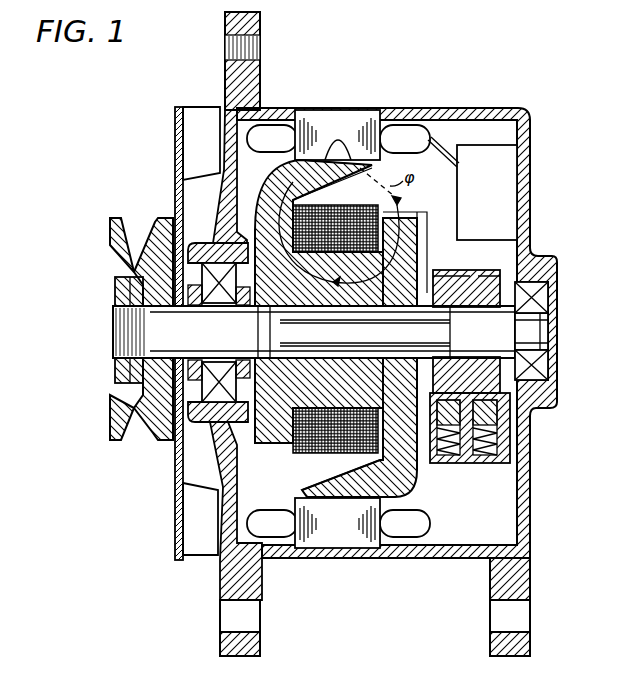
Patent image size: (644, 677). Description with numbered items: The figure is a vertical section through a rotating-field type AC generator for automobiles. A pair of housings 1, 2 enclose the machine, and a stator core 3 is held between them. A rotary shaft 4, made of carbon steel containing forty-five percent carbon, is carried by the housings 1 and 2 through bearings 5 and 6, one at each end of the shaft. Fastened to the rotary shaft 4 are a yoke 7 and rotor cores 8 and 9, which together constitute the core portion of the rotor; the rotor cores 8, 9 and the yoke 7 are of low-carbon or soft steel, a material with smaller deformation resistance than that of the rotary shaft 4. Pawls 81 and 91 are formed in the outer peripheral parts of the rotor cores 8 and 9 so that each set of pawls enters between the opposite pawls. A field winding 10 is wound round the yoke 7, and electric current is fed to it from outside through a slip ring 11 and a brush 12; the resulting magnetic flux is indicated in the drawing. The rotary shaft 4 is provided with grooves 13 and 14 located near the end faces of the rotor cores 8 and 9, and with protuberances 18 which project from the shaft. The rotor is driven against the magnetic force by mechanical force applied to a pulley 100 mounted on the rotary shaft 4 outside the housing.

The housing 1 is at (282, 113).
The pawl 81 is at (333, 177).
The stator core 3 is at (364, 117).
The housing 2 is at (488, 112).
The bearing 5 is at (213, 263).
The groove 13 is at (253, 260).
The protuberance 18 is at (388, 323).
The groove 14 is at (433, 274).
The slip ring 11 is at (453, 273).
The rotary shaft 4 is at (118, 370).
The pulley 100 is at (163, 430).
The rotor core 8 is at (256, 440).
The yoke 7 is at (296, 395).
The pawl 91 is at (333, 483).
The field winding 10 is at (302, 490).
The rotor core 9 is at (410, 473).
The brush 12 is at (473, 412).
The bearing 6 is at (533, 373).